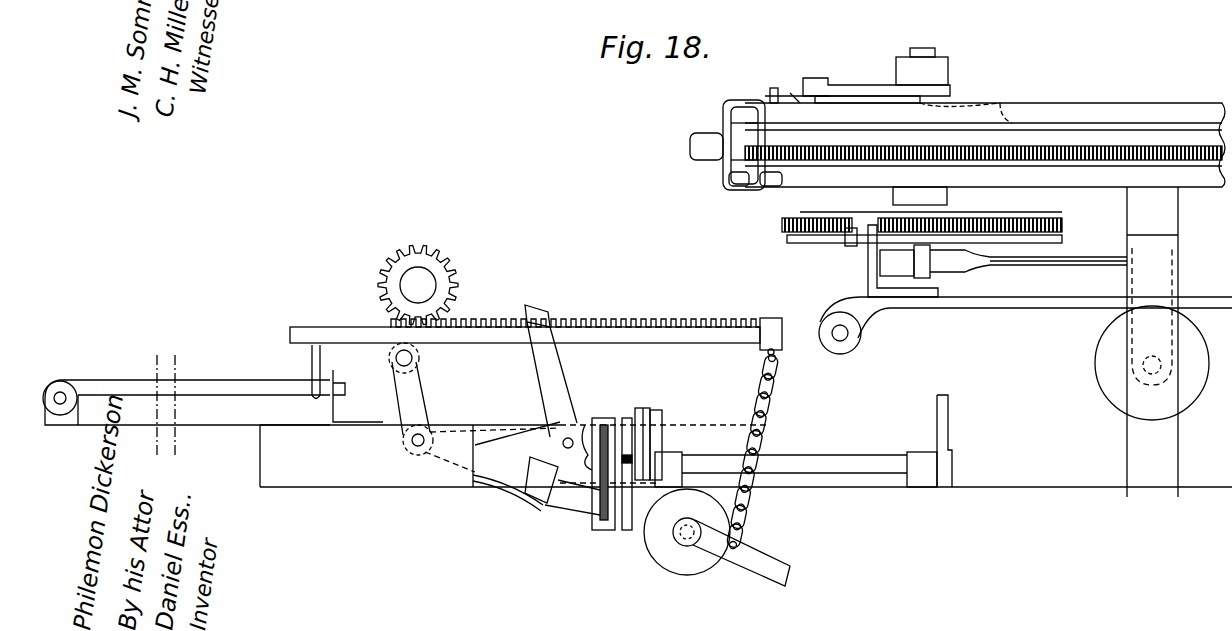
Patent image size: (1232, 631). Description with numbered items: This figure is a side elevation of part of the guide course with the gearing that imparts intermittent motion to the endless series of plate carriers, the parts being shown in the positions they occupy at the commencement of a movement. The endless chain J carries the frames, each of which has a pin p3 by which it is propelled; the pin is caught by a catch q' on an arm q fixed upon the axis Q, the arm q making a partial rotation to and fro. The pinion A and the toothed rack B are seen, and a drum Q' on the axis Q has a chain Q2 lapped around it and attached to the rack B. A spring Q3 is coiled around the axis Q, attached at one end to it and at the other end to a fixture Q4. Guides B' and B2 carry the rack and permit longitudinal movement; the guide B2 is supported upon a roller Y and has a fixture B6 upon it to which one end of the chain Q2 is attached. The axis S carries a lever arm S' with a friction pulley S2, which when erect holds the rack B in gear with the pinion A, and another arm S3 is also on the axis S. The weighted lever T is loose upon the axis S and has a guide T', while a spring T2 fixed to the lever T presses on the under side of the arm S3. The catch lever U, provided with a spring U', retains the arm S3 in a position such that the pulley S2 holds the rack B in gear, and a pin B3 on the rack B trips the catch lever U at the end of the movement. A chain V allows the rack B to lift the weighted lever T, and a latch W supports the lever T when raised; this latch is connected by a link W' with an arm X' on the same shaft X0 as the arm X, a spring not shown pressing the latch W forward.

The endless chain J is at (957, 145).
The axis Q is at (931, 53).
The arm q is at (876, 77).
The pin p3 is at (774, 88).
The catch q' is at (786, 80).
The chain Q2 is at (782, 225).
The drum Q' is at (933, 219).
The fixture B6 is at (868, 260).
The spring Q3 is at (960, 272).
The fixture Q4 is at (1050, 265).
The guide B2 is at (1000, 308).
The pin B3 is at (845, 340).
The roller Y is at (1152, 342).
The toothed rack B is at (536, 323).
The pinion A is at (418, 275).
The guide B' is at (213, 400).
The friction pulley S2 is at (419, 358).
The lever arm S' is at (424, 398).
The axis S is at (406, 452).
The arm S3 is at (495, 462).
The spring T2 is at (493, 483).
The catch lever U is at (551, 376).
The spring U' is at (589, 426).
The guide T' is at (606, 457).
The latch W is at (640, 452).
The link W' is at (661, 434).
The arm X' is at (669, 445).
The shaft X0 is at (850, 455).
The arm X is at (953, 441).
The chain V is at (758, 450).
The weighted lever T is at (717, 553).